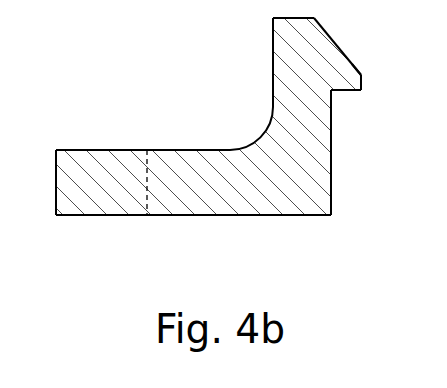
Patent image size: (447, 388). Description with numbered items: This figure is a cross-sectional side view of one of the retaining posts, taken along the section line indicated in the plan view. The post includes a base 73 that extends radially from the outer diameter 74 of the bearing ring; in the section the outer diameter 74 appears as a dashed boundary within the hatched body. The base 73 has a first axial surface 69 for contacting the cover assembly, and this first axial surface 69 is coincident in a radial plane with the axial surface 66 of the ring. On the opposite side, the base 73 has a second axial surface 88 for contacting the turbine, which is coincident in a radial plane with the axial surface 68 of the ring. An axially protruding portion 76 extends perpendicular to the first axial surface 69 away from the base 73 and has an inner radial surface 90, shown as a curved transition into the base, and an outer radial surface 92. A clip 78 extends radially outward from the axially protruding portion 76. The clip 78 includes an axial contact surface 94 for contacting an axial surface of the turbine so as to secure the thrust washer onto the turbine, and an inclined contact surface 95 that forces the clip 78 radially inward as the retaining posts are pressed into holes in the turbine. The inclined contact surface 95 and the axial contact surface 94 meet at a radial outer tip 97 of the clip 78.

The axial surface 66 is at (68, 216).
The axial surface 68 is at (78, 150).
The first axial surface 69 is at (228, 216).
The base 73 is at (186, 190).
The outer diameter 74 is at (147, 190).
The axially protruding portion 76 is at (287, 62).
The clip 78 is at (352, 75).
The second axial surface 88 is at (170, 150).
The inner radial surface 90 is at (273, 86).
The outer radial surface 92 is at (332, 137).
The axial contact surface 94 is at (359, 91).
The inclined contact surface 95 is at (337, 45).
The radial outer tip 97 is at (363, 82).